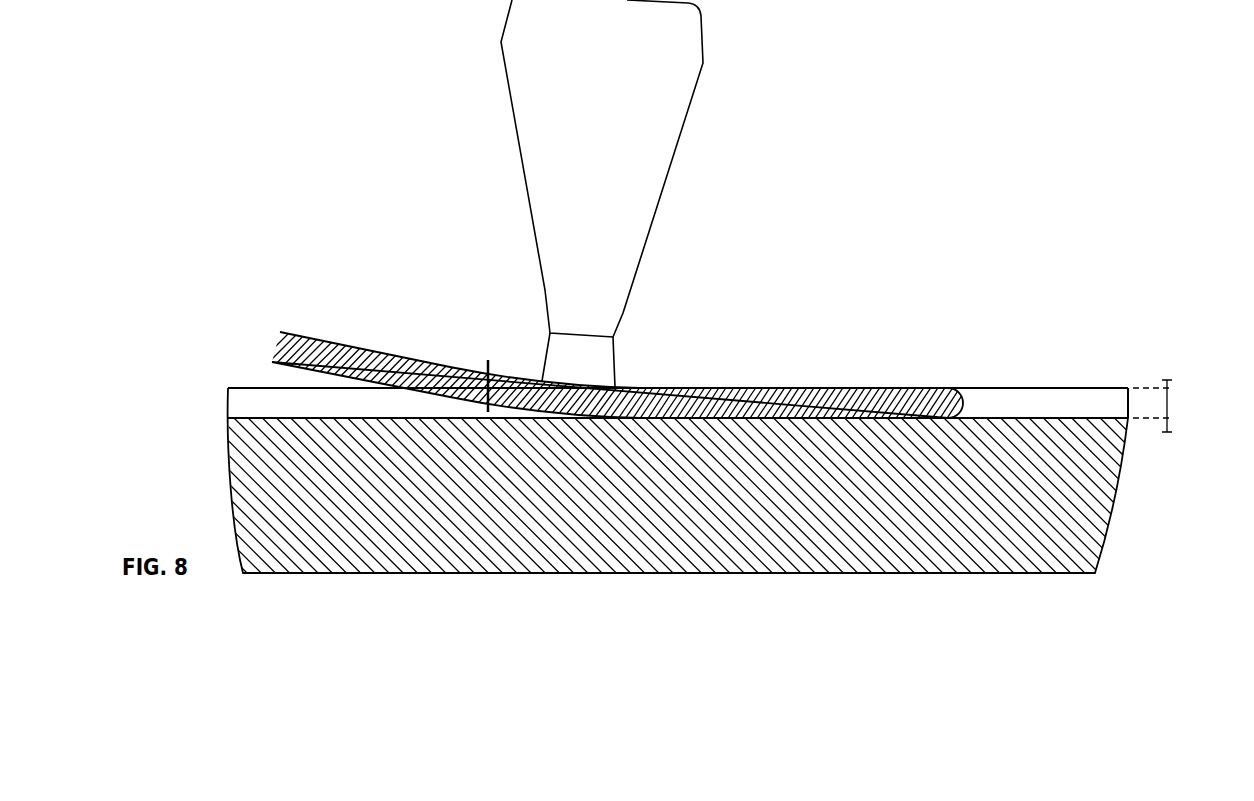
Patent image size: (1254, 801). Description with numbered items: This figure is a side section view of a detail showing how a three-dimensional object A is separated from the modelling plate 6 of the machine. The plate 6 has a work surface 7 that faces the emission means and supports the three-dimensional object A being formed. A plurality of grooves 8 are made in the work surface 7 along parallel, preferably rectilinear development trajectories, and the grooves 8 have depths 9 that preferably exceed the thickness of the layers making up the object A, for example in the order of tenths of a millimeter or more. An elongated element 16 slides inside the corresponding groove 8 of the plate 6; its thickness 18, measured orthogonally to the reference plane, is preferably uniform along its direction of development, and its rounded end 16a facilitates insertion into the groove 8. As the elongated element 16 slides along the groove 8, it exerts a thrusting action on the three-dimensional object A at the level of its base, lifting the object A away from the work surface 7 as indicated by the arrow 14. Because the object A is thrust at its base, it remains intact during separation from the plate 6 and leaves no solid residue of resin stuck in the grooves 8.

The modelling plate 6 is at (273, 495).
The work surface 7 is at (1060, 387).
The groove 8 is at (1085, 405).
The depth 9 is at (1170, 398).
The strip assembly 14 is at (443, 338).
The elongated element 16 is at (355, 347).
The rounded end 16a is at (963, 390).
The thickness 18 is at (494, 372).
The three-dimensional object A is at (598, 255).